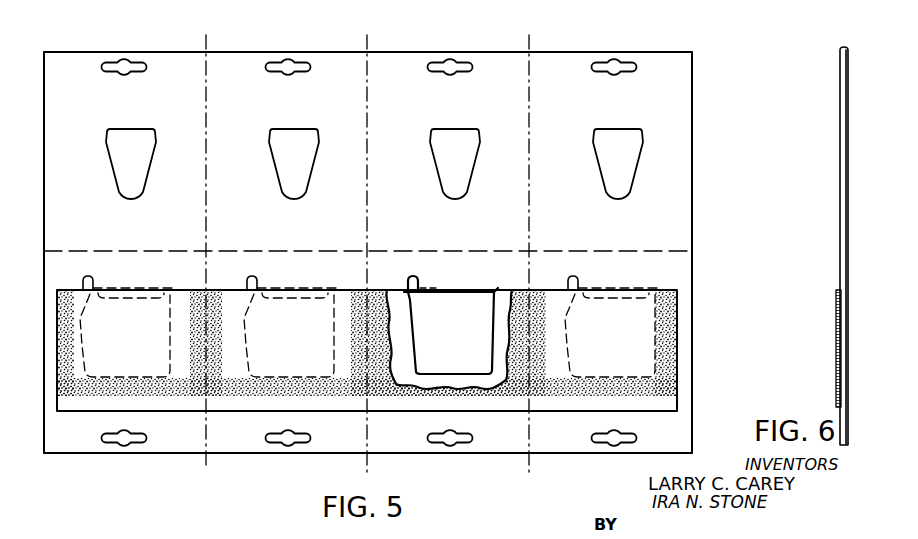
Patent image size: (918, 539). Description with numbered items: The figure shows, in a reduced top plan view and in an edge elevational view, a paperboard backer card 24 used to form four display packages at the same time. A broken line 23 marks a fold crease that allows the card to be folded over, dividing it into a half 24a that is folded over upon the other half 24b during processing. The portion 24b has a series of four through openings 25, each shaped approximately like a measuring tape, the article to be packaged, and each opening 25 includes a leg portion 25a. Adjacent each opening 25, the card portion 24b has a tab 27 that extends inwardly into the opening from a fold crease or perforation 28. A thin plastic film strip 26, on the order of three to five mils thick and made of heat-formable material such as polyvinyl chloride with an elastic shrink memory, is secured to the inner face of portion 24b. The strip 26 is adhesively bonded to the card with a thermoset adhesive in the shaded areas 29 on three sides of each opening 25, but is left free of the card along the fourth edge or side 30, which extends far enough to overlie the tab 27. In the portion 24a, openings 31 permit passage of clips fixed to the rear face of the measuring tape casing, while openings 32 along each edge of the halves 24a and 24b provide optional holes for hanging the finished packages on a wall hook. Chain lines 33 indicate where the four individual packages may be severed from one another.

In FIG. 5, the broken line 23 is at (675, 251).
In FIG. 5, the backer card 24 is at (686, 168).
In FIG. 6, the backer card 24 is at (840, 193).
In FIG. 5, the half of the card 24a is at (680, 114).
In FIG. 5, the half of the card 24b is at (684, 316).
In FIG. 5, the through opening 25 is at (443, 315).
In FIG. 5, the leg portion 25a is at (410, 282).
In FIG. 5, the plastic film strip 26 is at (671, 398).
In FIG. 6, the plastic film strip 26 is at (836, 365).
In FIG. 5, the tab 27 is at (474, 292).
In FIG. 5, the fold crease or perforation 28 is at (461, 290).
In FIG. 5, the shaded areas 29 is at (673, 366).
In FIG. 5, the fourth edge or side 30 is at (568, 288).
In FIG. 5, the opening 31 is at (612, 129).
In FIG. 5, the opening 32 is at (616, 62).
In FIG. 5, the chain line 33 is at (207, 70).